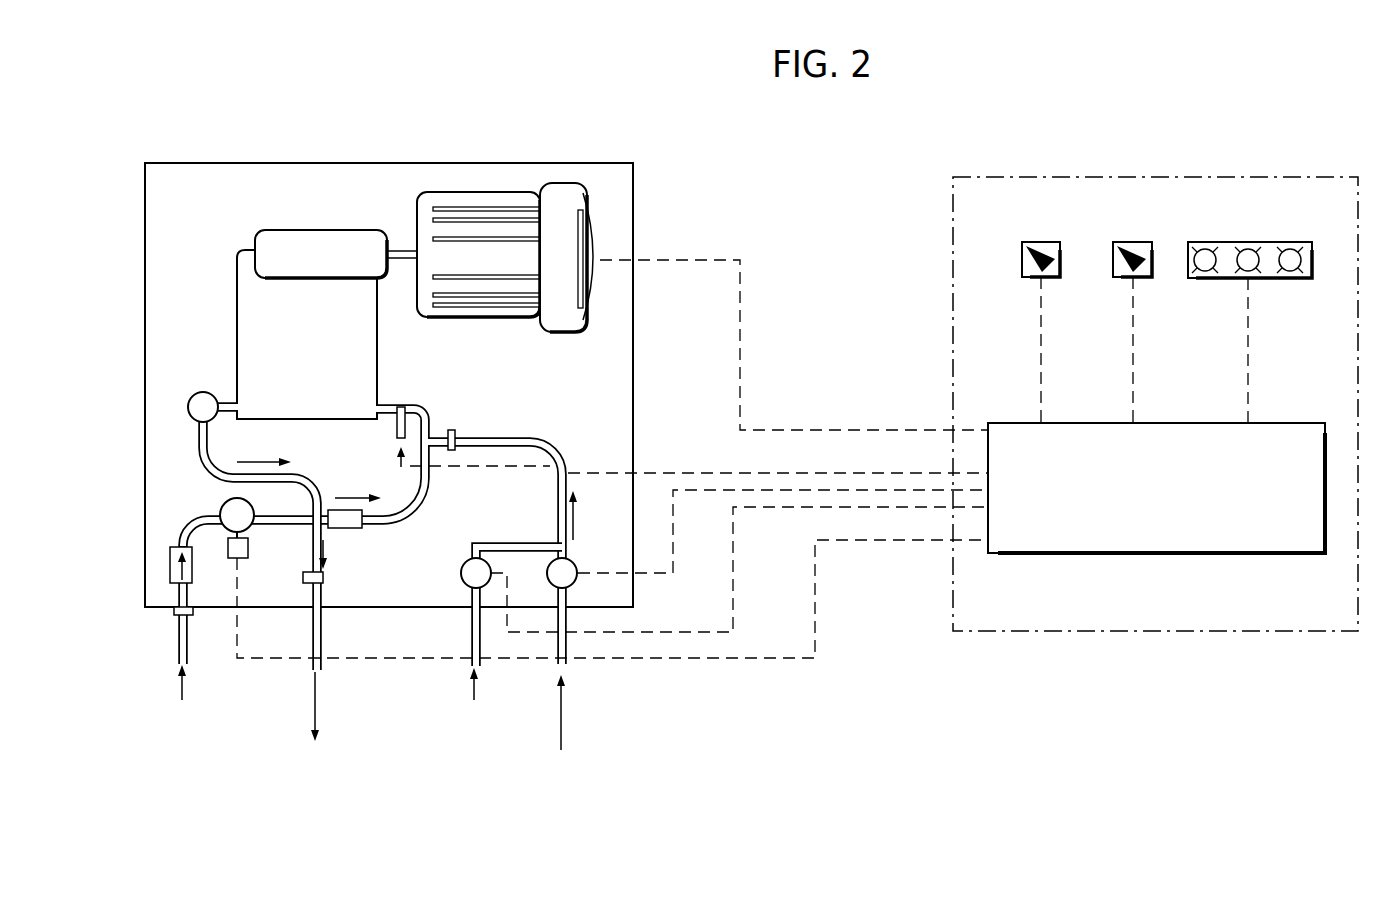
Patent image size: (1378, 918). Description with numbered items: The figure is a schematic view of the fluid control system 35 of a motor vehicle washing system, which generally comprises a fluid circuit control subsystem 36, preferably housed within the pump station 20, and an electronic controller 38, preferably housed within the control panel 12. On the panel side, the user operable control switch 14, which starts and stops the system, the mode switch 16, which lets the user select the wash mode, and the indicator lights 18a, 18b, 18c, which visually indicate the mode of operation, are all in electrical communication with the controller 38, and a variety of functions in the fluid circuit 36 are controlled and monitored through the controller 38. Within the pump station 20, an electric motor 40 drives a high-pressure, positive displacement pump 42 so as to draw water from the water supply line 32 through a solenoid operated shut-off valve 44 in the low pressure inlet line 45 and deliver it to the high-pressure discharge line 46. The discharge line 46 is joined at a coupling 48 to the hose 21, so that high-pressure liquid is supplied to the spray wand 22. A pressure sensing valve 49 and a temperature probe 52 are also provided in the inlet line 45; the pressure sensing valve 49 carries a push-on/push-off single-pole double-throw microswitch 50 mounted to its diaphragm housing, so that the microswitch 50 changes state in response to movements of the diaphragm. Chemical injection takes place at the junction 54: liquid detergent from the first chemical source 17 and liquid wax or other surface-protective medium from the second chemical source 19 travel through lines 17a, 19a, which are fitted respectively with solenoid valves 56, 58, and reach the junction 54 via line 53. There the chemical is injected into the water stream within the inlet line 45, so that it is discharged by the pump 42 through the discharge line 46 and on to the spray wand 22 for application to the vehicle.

The control panel 12 is at (1318, 631).
The control switch 14 is at (1038, 242).
The mode switch 16 is at (1141, 220).
The CHEM 1 source 17 is at (478, 730).
The line 17a is at (470, 638).
The indicator light 18a is at (1208, 246).
The indicator light 18b is at (1253, 246).
The indicator light 18c is at (1295, 246).
The CHEM 2 source 19 is at (568, 756).
The line 19a is at (565, 668).
The pump station 20 is at (374, 163).
The hose 21 is at (318, 640).
The spray wand 22 is at (315, 754).
The water supply line 32 is at (178, 636).
The fluid control system 35 is at (1060, 94).
The fluid circuit control subsystem 36 is at (660, 120).
The electronic controller 38 is at (1228, 555).
The electric motor 40 is at (482, 317).
The pump 42 is at (288, 344).
The solenoid operated shut-off valve 44 is at (170, 570).
The low pressure inlet line 45 is at (405, 516).
The high-pressure discharge line 46 is at (204, 470).
The coupling 48 is at (323, 580).
The pressure sensing valve 49 is at (250, 525).
The microswitch 50 is at (228, 549).
The temperature probe 52 is at (397, 425).
The line 53 is at (548, 452).
The junction 54 is at (448, 438).
The solenoid valve 56 is at (461, 580).
The solenoid valve 58 is at (548, 575).